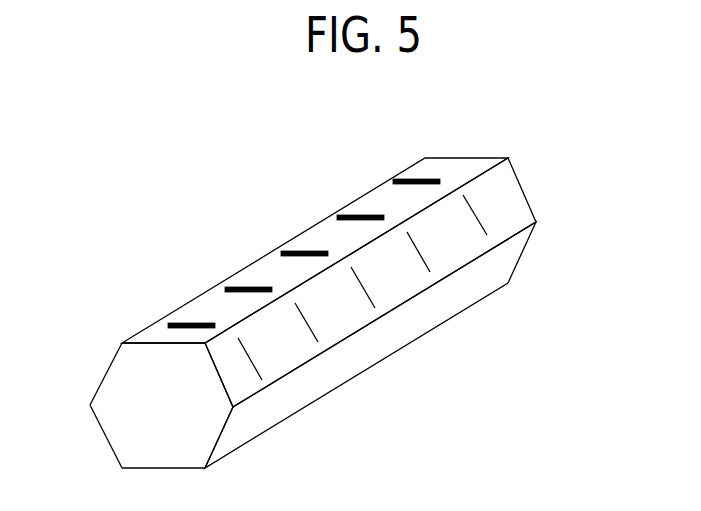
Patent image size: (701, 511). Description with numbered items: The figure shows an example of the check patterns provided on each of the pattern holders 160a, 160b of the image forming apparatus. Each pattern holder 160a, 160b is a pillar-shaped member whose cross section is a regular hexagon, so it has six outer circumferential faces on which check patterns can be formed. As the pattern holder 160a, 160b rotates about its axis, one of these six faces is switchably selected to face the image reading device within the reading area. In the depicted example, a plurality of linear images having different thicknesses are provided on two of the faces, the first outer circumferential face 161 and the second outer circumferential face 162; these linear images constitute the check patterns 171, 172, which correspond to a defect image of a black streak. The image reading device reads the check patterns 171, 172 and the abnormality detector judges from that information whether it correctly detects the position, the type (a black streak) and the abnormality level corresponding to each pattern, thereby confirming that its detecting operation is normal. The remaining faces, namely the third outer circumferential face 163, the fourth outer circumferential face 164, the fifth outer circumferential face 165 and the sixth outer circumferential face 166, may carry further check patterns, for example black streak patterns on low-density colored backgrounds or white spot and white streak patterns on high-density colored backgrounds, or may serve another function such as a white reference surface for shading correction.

The pattern holder 160a is at (332, 283).
The pattern holder 160b is at (332, 283).
The first outer circumferential face 161 is at (443, 167).
The second outer circumferential face 162 is at (507, 203).
The third outer circumferential face 163 is at (502, 263).
The fourth outer circumferential face 164 is at (168, 469).
The fifth outer circumferential face 165 is at (102, 433).
The sixth outer circumferential face 166 is at (108, 363).
The check pattern 171 is at (190, 323).
The check pattern 172 is at (475, 215).